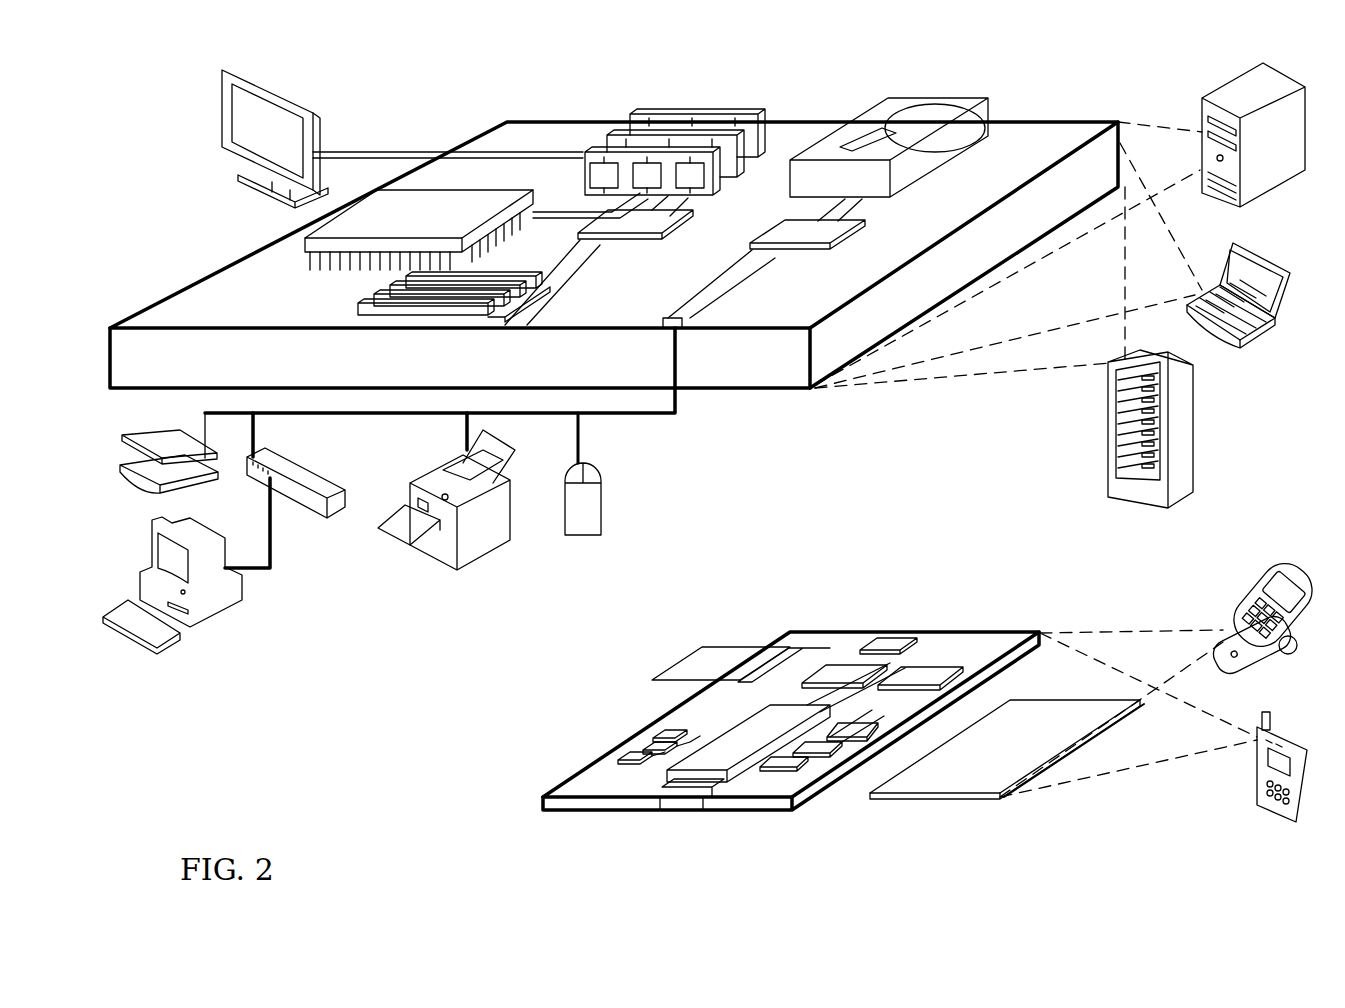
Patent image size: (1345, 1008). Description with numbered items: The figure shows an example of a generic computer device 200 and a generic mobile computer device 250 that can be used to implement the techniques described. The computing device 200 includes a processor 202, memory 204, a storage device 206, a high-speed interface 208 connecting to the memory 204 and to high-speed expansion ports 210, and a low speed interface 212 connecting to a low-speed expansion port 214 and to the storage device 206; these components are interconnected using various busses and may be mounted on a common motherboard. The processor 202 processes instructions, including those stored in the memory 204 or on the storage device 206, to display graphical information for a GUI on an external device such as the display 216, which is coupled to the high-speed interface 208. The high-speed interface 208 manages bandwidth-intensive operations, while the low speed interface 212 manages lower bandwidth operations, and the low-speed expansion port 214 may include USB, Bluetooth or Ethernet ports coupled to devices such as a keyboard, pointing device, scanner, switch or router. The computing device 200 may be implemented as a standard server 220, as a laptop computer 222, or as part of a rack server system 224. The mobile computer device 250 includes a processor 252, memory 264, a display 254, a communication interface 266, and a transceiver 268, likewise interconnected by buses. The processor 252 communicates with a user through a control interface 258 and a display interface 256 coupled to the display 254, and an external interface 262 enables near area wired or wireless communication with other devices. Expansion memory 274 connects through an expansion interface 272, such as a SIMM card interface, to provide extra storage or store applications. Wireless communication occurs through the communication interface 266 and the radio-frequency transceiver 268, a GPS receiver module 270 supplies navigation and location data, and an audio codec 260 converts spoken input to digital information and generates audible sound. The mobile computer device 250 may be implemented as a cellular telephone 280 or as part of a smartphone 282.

The computing device 200 is at (433, 92).
The processor 202 is at (305, 242).
The memory 204 is at (648, 118).
The storage device 206 is at (888, 112).
The high-speed interface 208 is at (613, 223).
The high-speed expansion ports 210 is at (378, 292).
The low speed interface 212 is at (805, 228).
The low-speed expansion port 214 is at (693, 328).
The display 216 is at (228, 80).
The standard server 220 is at (1203, 110).
The laptop computer 222 is at (1232, 255).
The rack server system 224 is at (1110, 458).
The mobile computer device 250 is at (771, 610).
The processor 252 is at (727, 784).
The display 254 is at (1000, 796).
The display interface 256 is at (793, 772).
The control interface 258 is at (826, 756).
The audio codec 260 is at (853, 738).
The external interface 262 is at (680, 797).
The memory 264 is at (628, 760).
The communication interface 266 is at (827, 680).
The transceiver 268 is at (927, 679).
The GPS receiver module 270 is at (884, 639).
The expansion interface 272 is at (767, 654).
The expansion memory 274 is at (698, 654).
The cellular telephone 280 is at (1276, 579).
The smartphone 282 is at (1257, 722).